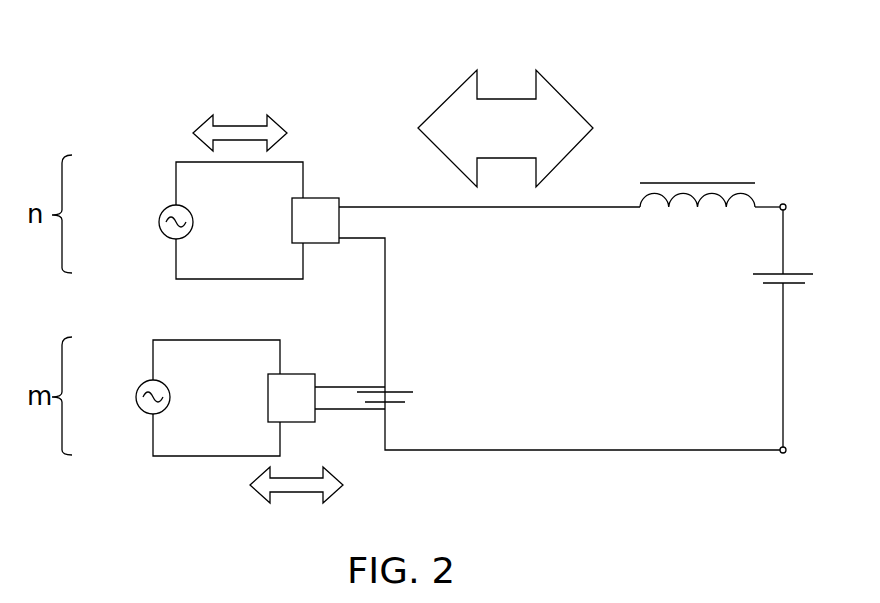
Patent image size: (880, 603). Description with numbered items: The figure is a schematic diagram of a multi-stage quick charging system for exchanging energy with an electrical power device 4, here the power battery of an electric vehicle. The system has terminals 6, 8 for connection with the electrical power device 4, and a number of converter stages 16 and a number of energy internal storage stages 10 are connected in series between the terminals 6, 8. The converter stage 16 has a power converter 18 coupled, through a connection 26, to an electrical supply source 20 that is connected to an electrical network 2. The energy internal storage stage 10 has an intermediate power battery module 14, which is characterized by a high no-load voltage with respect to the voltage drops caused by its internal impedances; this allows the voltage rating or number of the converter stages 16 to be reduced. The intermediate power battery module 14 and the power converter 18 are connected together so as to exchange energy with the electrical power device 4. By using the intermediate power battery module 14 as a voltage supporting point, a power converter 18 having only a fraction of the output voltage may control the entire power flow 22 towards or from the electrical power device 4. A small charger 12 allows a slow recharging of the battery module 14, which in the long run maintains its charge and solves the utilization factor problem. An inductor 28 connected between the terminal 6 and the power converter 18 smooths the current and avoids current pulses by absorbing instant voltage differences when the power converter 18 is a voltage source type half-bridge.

The electrical network 2 is at (143, 382).
The electrical power device 4 is at (802, 273).
The terminal 6 is at (787, 205).
The terminal 8 is at (787, 453).
The energy internal storage stage 10 is at (347, 437).
The charger 12 is at (291, 398).
The intermediate power battery module 14 is at (402, 390).
The converter stage 16 is at (328, 158).
The power converter 18 is at (315, 220).
The electrical supply source 20 is at (165, 208).
The power flow 22 is at (515, 99).
The connection 26 is at (185, 162).
The inductor 28 is at (690, 183).